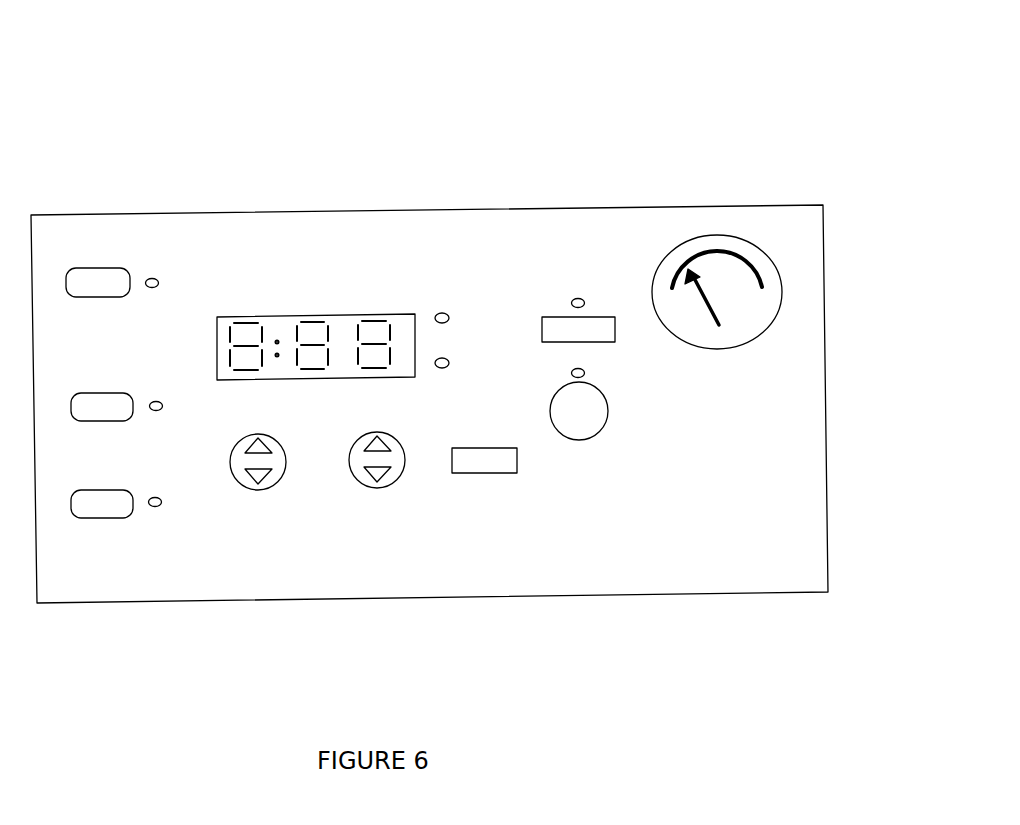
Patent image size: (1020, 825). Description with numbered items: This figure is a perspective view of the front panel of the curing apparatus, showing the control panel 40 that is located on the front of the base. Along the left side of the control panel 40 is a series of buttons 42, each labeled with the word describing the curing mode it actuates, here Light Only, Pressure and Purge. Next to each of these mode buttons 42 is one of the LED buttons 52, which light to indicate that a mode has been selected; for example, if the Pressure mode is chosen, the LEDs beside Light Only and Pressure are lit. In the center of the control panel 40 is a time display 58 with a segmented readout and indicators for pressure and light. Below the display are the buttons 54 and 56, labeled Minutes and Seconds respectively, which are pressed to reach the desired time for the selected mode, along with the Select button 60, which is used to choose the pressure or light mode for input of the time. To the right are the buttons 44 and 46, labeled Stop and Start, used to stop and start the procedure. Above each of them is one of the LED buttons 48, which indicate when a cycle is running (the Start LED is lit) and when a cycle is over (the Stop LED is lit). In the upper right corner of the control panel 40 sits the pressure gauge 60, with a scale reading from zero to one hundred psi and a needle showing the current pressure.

The control panel 40 is at (373, 41).
The buttons 42 is at (120, 490).
The Stop button 44 is at (602, 318).
The Start button 46 is at (603, 416).
The LED buttons 48 is at (571, 373).
The LED buttons 52 is at (160, 402).
The Minutes button 54 is at (260, 490).
The Seconds button 56 is at (392, 488).
The time display 58 is at (350, 317).
The pressure gauge 60 is at (772, 303).